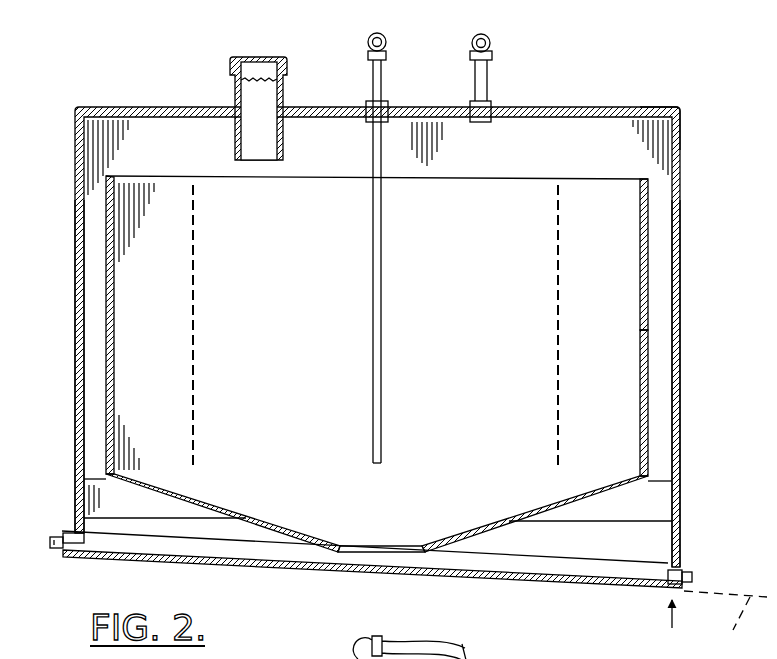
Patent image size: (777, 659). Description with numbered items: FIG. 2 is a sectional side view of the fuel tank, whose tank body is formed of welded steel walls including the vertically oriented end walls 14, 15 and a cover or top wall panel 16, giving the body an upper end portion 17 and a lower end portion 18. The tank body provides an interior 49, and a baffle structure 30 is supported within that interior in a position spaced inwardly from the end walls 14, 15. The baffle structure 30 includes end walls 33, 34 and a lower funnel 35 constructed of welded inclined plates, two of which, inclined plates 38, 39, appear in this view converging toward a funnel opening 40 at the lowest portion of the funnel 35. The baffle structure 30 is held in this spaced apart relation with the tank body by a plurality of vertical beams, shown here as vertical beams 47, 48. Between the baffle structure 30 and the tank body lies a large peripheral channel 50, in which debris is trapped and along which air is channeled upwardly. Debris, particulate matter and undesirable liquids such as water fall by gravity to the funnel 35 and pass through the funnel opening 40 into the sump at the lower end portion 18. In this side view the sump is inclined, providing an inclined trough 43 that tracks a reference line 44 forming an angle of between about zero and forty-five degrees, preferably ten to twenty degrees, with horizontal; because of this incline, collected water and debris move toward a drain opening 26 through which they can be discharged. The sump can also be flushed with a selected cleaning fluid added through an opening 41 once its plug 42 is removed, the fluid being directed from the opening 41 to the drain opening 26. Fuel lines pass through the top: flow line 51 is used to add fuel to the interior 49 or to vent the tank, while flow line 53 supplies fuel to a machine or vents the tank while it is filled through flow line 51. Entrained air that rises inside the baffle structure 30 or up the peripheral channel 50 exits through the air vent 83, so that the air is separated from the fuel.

The end wall 14 is at (681, 353).
The end wall 15 is at (76, 360).
The top wall panel 16 is at (601, 106).
The upper end portion 17 is at (676, 101).
The lower end portion 18 is at (672, 628).
The drain opening 26 is at (651, 572).
The baffle structure 30 is at (650, 243).
The end wall 33 is at (650, 318).
The end wall 34 is at (111, 290).
The lower funnel 35 is at (126, 483).
The inclined plate 38 is at (515, 526).
The inclined plate 39 is at (262, 520).
The funnel opening 40 is at (398, 545).
The opening 41 is at (88, 554).
The plug 42 is at (54, 548).
The inclined trough 43 is at (356, 576).
The reference line 44 is at (725, 618).
The vertical beam 47 is at (552, 262).
The vertical beam 48 is at (197, 296).
The interior 49 is at (172, 138).
The peripheral channel 50 is at (97, 242).
The flow line 51 is at (488, 84).
The flow line 53 is at (383, 72).
The air vent 83 is at (258, 57).